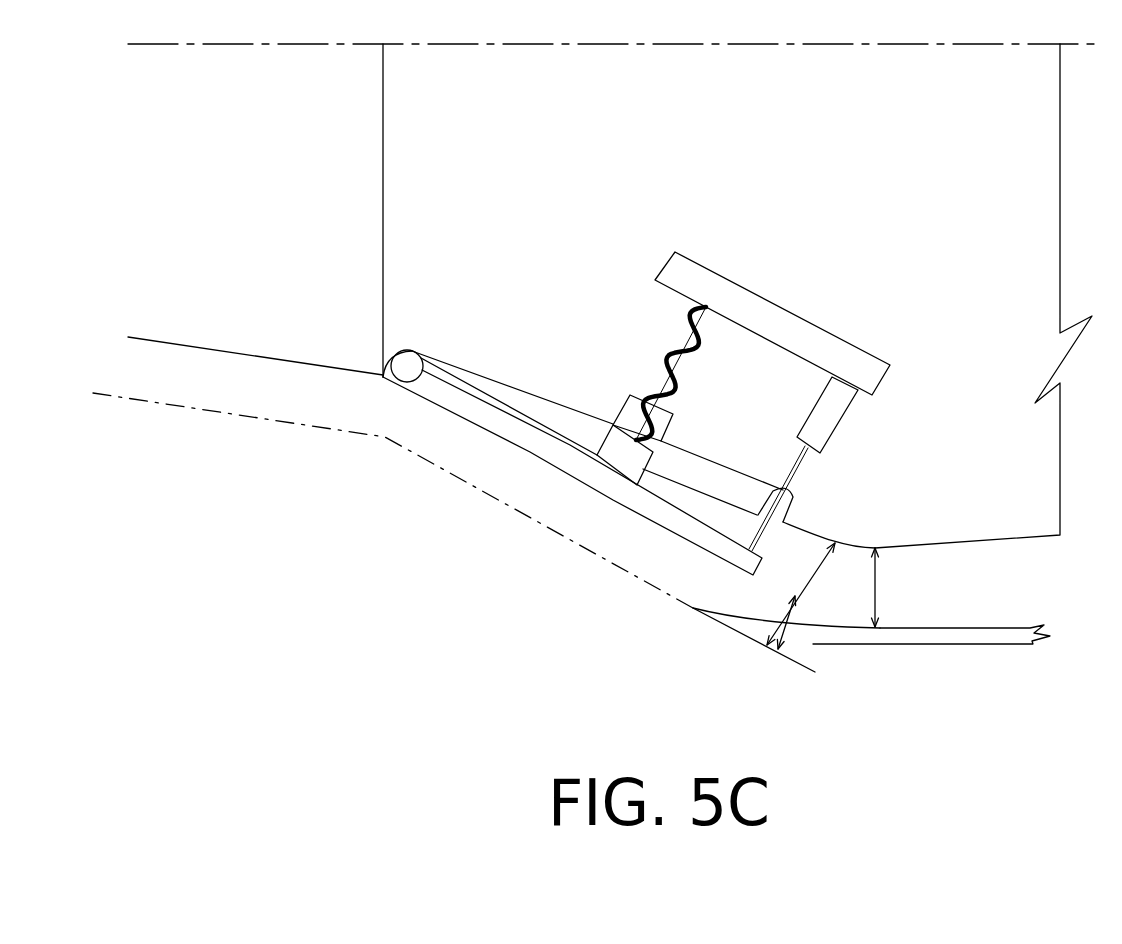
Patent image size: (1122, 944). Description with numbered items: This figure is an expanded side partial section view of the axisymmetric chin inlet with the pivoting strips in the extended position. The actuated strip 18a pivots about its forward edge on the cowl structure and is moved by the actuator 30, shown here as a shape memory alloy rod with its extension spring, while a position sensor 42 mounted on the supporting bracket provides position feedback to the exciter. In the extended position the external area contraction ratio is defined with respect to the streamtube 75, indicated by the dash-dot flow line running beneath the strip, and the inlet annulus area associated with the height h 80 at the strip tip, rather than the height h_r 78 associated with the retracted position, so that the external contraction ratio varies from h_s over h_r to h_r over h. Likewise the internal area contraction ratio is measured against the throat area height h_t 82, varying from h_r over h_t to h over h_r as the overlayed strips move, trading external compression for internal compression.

The actuated strip 18a is at (570, 463).
The actuator 30 is at (677, 368).
The position sensor 42 is at (832, 415).
The streamtube 75 is at (575, 543).
The inlet annulus height h_r 78 is at (806, 597).
The inlet annulus height h 80 is at (781, 617).
The throat area height h_t 82 is at (878, 590).